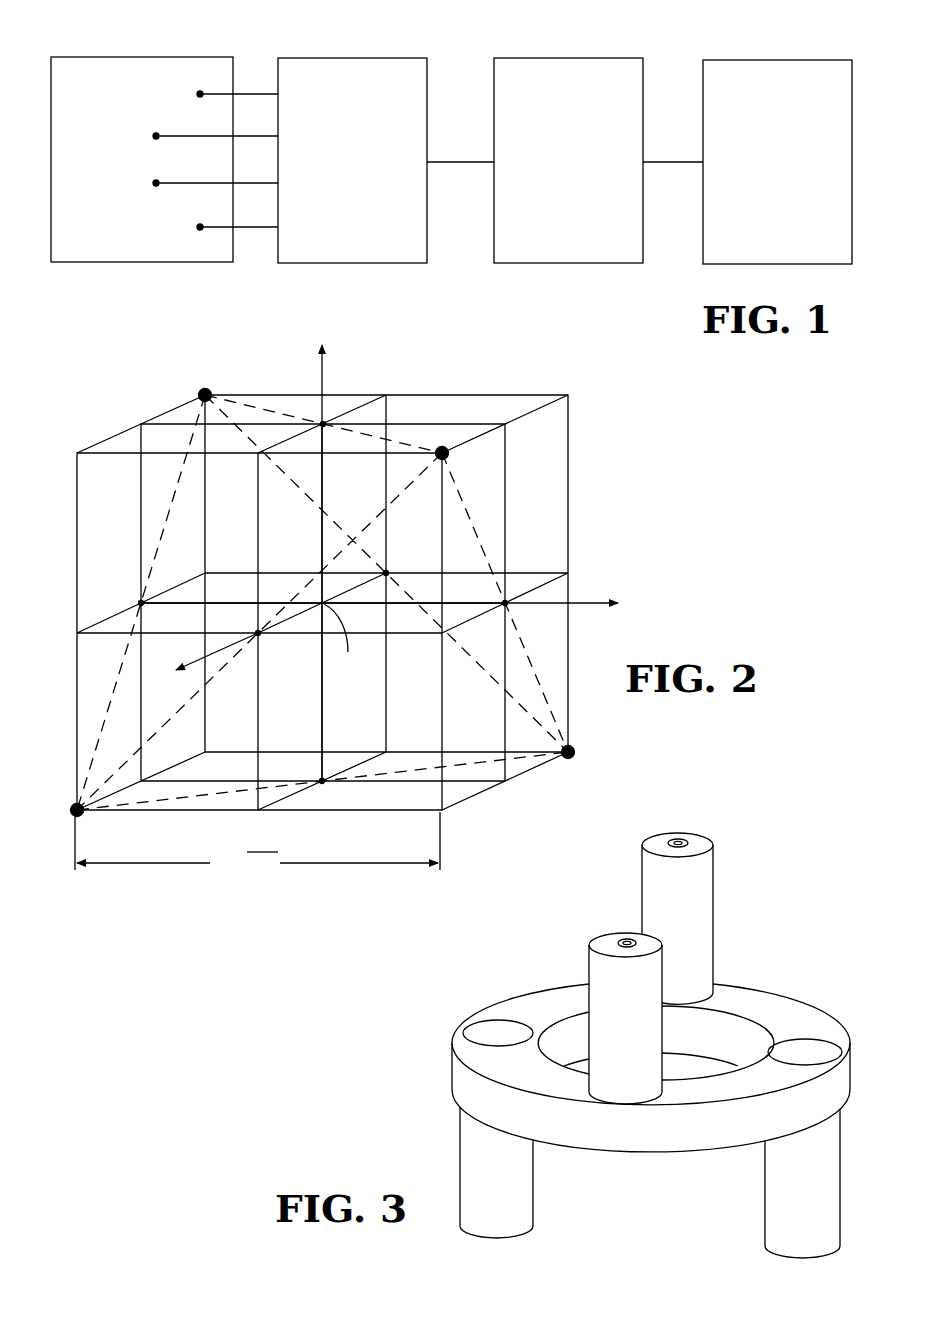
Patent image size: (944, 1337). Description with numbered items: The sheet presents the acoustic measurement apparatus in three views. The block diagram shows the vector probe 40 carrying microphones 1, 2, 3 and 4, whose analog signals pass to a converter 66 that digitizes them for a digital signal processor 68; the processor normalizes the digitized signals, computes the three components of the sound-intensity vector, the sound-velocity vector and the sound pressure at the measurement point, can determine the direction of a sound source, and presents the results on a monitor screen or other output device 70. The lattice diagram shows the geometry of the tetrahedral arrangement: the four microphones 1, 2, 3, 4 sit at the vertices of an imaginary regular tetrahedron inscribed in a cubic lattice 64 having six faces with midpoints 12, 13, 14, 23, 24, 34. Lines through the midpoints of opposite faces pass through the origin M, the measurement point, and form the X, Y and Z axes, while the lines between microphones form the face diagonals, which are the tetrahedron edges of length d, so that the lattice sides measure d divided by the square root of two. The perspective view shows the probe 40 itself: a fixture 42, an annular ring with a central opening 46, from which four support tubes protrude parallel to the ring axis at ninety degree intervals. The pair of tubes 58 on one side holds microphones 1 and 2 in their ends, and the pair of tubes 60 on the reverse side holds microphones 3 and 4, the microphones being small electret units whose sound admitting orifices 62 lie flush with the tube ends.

In FIG. 1, the acoustic vector probe 40 is at (145, 55).
In FIG. 3, the acoustic vector probe 40 is at (624, 1039).
In FIG. 1, the converter 66 is at (330, 57).
In FIG. 1, the digital signal processor 68 is at (540, 58).
In FIG. 1, the output device 70 is at (750, 58).
In FIG. 1, the microphone 1 is at (156, 136).
In FIG. 2, the microphone 1 is at (205, 395).
In FIG. 3, the microphone 1 is at (598, 942).
In FIG. 1, the microphone 2 is at (156, 183).
In FIG. 2, the microphone 2 is at (442, 455).
In FIG. 3, the microphone 2 is at (713, 866).
In FIG. 1, the microphone 3 is at (200, 94).
In FIG. 2, the microphone 3 is at (568, 754).
In FIG. 3, the microphone 3 is at (477, 1238).
In FIG. 1, the microphone 4 is at (200, 227).
In FIG. 2, the microphone 4 is at (75, 811).
In FIG. 3, the microphone 4 is at (782, 1256).
In FIG. 2, the cubic lattice 64 is at (592, 437).
In FIG. 2, the midpoint 12 is at (323, 424).
In FIG. 2, the midpoint 13 is at (386, 573).
In FIG. 2, the midpoint 14 is at (141, 603).
In FIG. 2, the midpoint 23 is at (505, 603).
In FIG. 2, the midpoint 24 is at (258, 633).
In FIG. 2, the midpoint 34 is at (322, 782).
In FIG. 3, the fixture 42 is at (450, 1097).
In FIG. 3, the central opening 46 is at (578, 1040).
In FIG. 3, the support tubes 58 is at (650, 956).
In FIG. 3, the support tubes 60 is at (618, 1201).
In FIG. 3, the sound admitting orifices 62 is at (623, 941).